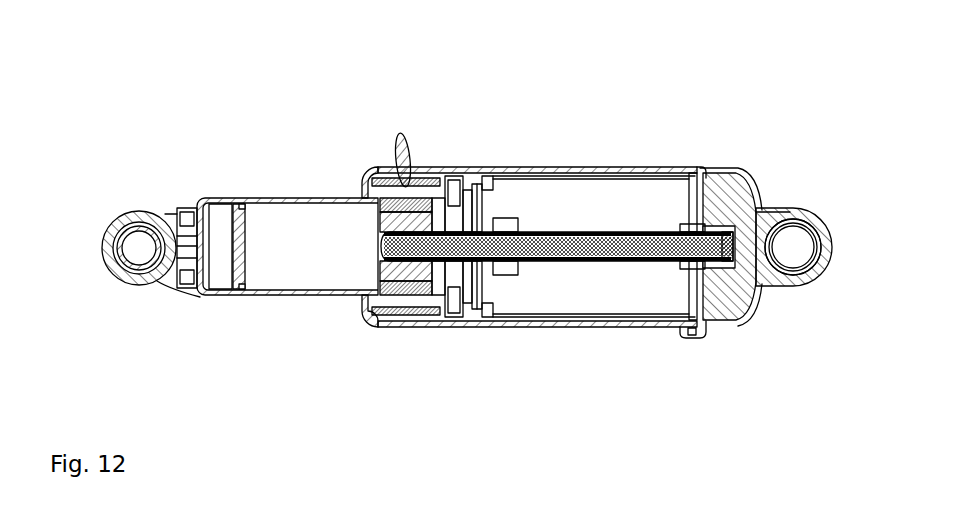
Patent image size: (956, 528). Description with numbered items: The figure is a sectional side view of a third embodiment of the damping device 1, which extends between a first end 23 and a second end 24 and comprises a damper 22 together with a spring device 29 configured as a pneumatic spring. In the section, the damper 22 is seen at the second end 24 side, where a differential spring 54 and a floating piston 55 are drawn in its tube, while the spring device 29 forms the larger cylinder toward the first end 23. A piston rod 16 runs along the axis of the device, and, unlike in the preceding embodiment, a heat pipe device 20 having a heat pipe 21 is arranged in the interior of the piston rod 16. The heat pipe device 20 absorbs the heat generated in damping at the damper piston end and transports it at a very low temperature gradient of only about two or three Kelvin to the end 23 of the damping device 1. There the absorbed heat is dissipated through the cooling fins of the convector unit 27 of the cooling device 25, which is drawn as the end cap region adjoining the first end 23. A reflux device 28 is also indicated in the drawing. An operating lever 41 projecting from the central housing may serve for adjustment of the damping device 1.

The damping device 1 is at (157, 92).
The piston rod 16 is at (590, 275).
The heat pipe device 20 is at (725, 170).
The heat pipe 21 is at (533, 230).
The damper 22 is at (292, 305).
The first end 23 is at (790, 300).
The second end 24 is at (120, 297).
The cooling device 25 is at (756, 180).
The convector unit 27 is at (712, 305).
The reflux device 28 is at (583, 233).
The spring device 29 is at (535, 333).
The operating lever 41 is at (418, 118).
The differential spring 54 is at (222, 208).
The floating piston 55 is at (243, 205).